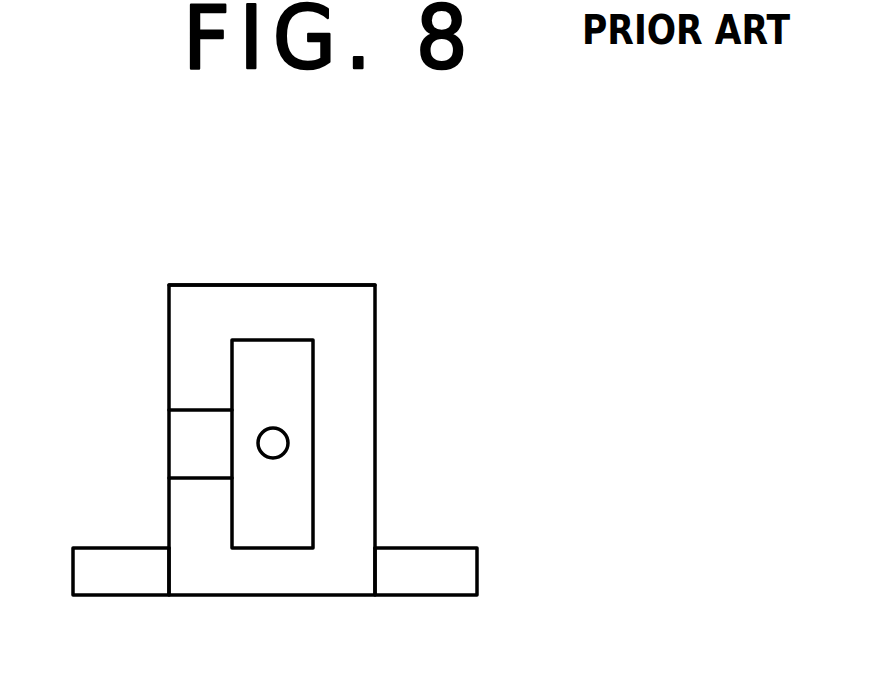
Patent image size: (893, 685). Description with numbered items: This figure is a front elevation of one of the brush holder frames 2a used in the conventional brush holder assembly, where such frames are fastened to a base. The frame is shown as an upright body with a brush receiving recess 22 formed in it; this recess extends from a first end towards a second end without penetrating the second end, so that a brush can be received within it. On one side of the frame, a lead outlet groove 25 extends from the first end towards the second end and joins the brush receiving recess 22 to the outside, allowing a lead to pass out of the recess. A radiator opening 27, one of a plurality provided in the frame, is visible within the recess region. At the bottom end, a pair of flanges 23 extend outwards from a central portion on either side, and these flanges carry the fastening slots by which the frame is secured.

The negative-side brush holder frame 2a is at (384, 275).
The brush receiving recess 22 is at (288, 372).
The radiator opening 27 is at (282, 445).
The lead outlet groove 25 is at (200, 453).
The flange 23 is at (110, 567).